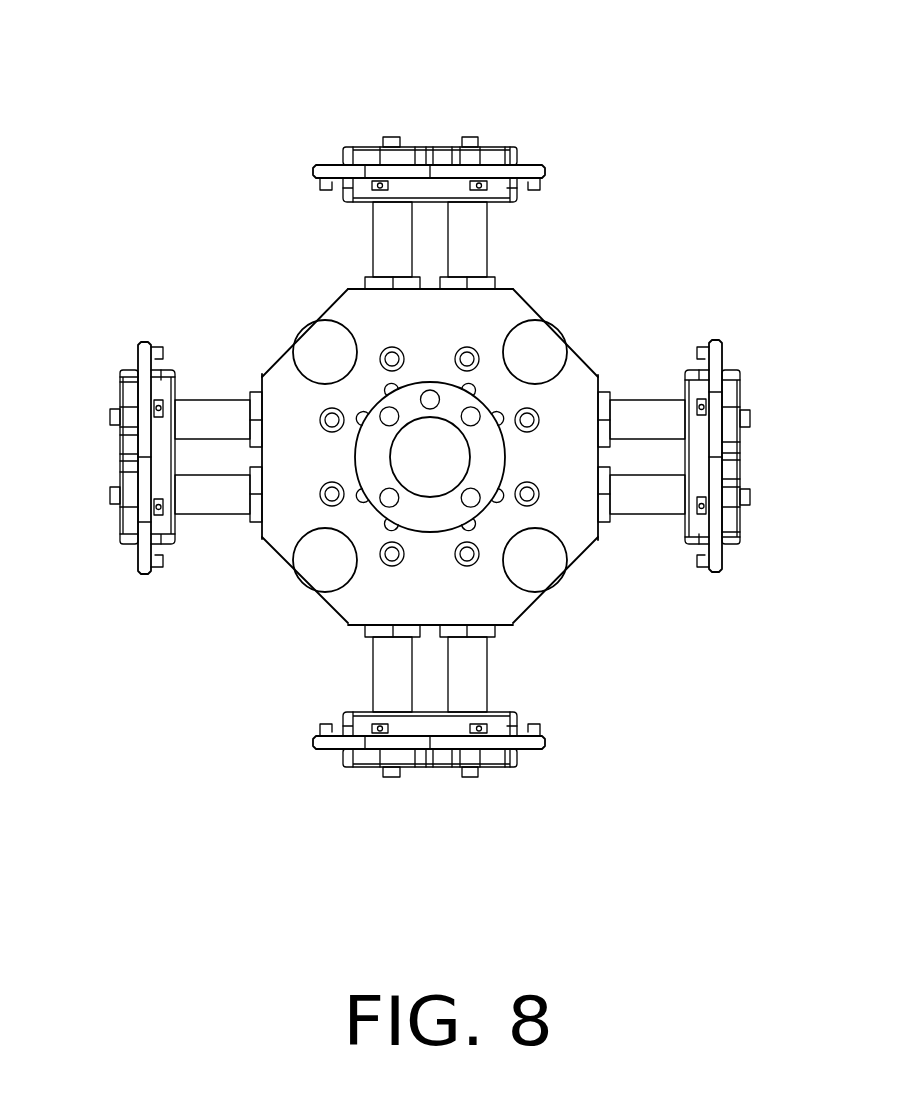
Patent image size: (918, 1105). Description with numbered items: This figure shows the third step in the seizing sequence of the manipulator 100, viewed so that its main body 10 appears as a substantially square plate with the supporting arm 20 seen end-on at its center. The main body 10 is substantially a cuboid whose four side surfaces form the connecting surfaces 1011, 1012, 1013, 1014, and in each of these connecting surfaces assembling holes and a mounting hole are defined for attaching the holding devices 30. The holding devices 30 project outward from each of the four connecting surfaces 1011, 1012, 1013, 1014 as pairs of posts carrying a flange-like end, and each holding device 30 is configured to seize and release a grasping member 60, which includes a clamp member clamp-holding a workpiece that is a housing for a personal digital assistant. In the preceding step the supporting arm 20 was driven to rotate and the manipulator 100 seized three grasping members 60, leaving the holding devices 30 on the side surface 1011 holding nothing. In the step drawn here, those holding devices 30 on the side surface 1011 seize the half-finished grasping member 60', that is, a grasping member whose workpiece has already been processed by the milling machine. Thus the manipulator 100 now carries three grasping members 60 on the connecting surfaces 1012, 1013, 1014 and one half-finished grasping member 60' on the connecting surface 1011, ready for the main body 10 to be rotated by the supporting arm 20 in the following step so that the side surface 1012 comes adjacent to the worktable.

The manipulator 100 is at (141, 75).
The main body 10 is at (575, 377).
The supporting arm 20 is at (413, 463).
The holding devices 30 is at (383, 670).
The grasping members 60 is at (412, 334).
The half-finished grasping members 60' is at (433, 771).
The connecting surface 1011 is at (498, 627).
The connecting surface 1012 is at (600, 530).
The connecting surface 1013 is at (502, 290).
The connecting surface 1014 is at (263, 380).